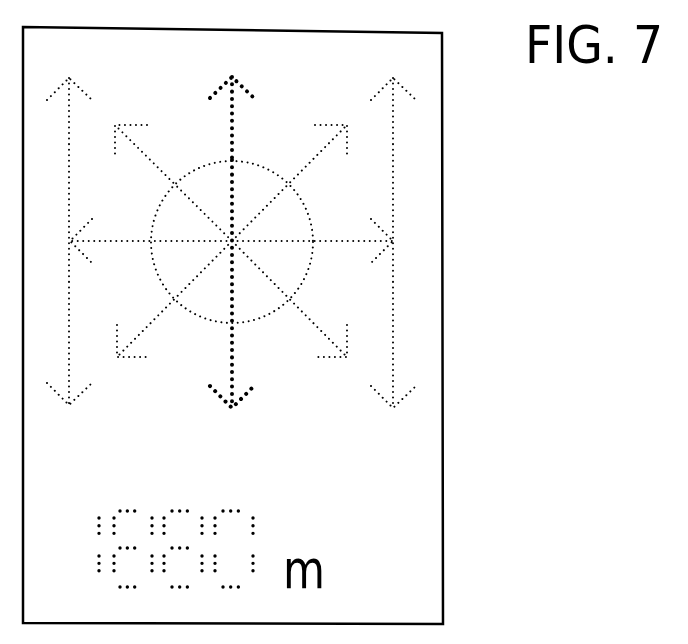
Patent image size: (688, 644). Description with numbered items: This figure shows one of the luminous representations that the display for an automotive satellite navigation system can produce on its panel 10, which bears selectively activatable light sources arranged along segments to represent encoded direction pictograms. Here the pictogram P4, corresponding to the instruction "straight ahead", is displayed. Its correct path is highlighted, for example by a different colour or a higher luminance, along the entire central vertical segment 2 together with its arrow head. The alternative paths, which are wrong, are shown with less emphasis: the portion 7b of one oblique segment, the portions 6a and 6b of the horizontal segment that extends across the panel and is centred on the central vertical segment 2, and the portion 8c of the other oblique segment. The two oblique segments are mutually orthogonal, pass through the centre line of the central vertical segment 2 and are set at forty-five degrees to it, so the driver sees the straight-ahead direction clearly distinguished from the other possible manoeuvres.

The panel 10 is at (482, 344).
The central vertical segment 2 is at (250, 242).
The pictogram P4 is at (240, 135).
The portion of the horizontal segment 6a is at (290, 242).
The portion of the horizontal segment 6b is at (173, 238).
The portion of the oblique segment 8c is at (267, 204).
The portion of the oblique segment 7b is at (272, 283).